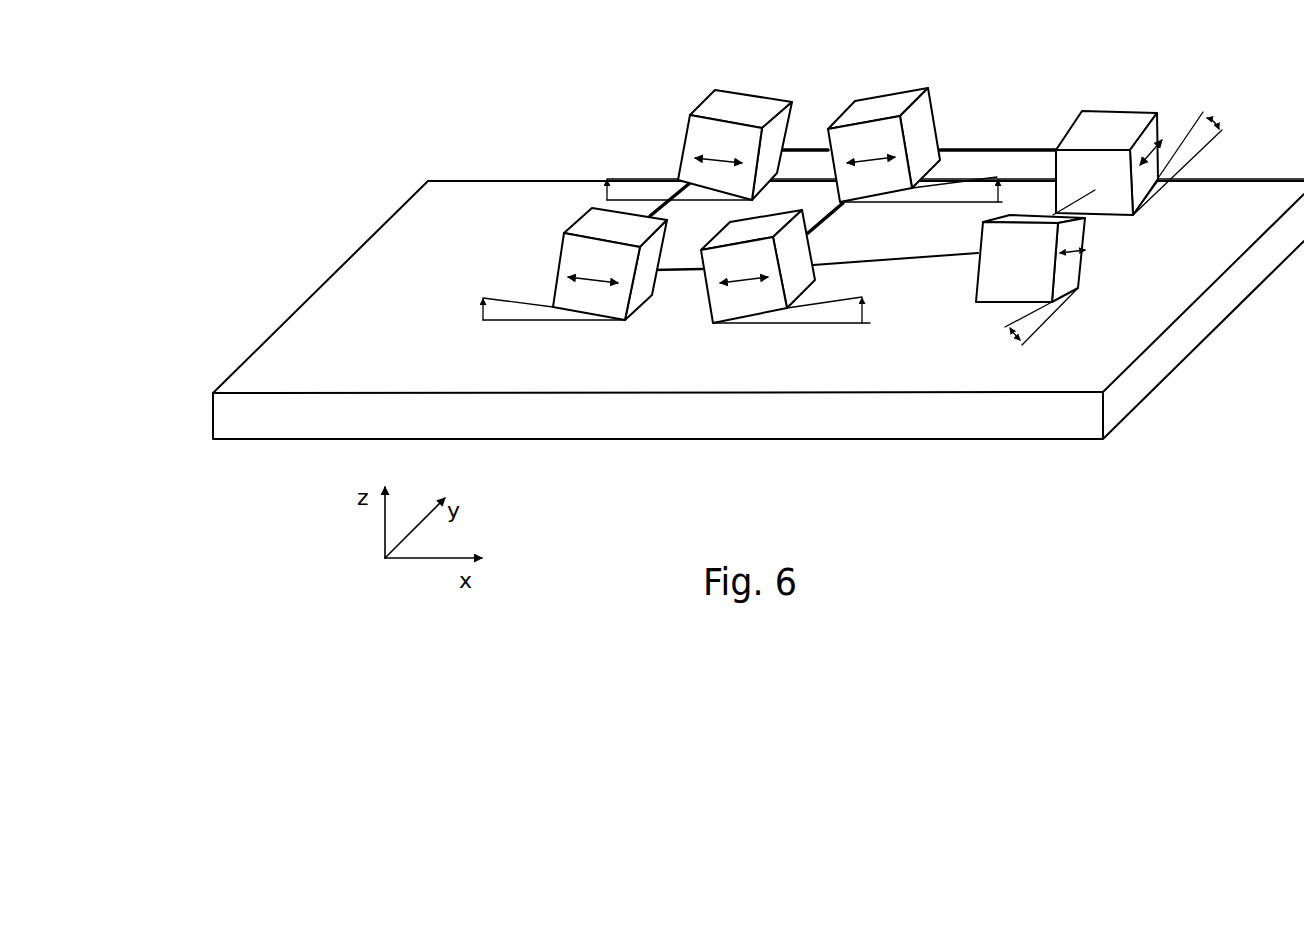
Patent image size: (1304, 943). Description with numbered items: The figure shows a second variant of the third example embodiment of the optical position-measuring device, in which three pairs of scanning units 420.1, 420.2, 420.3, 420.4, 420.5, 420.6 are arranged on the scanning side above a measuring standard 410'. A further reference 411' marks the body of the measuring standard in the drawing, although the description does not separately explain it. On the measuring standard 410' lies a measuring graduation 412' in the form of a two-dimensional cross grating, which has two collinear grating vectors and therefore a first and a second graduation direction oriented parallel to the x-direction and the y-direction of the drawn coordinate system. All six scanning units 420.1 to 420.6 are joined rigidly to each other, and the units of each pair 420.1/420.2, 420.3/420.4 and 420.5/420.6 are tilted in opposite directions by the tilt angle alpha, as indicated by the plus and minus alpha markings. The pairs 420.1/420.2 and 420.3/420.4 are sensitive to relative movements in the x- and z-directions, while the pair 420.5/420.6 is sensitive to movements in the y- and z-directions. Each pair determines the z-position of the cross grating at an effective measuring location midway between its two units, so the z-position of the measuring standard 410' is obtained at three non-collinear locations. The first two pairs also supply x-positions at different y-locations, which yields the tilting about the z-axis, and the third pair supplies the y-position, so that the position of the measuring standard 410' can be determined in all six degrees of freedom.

The measuring standard 410' is at (714, 274).
The carrier plate 411' is at (714, 310).
The measuring graduation 412' is at (758, 287).
The scanning unit 420.1 is at (564, 260).
The scanning unit 420.2 is at (717, 307).
The scanning unit 420.3 is at (740, 103).
The scanning unit 420.4 is at (888, 103).
The scanning unit 420.5 is at (1075, 268).
The scanning unit 420.6 is at (1118, 122).